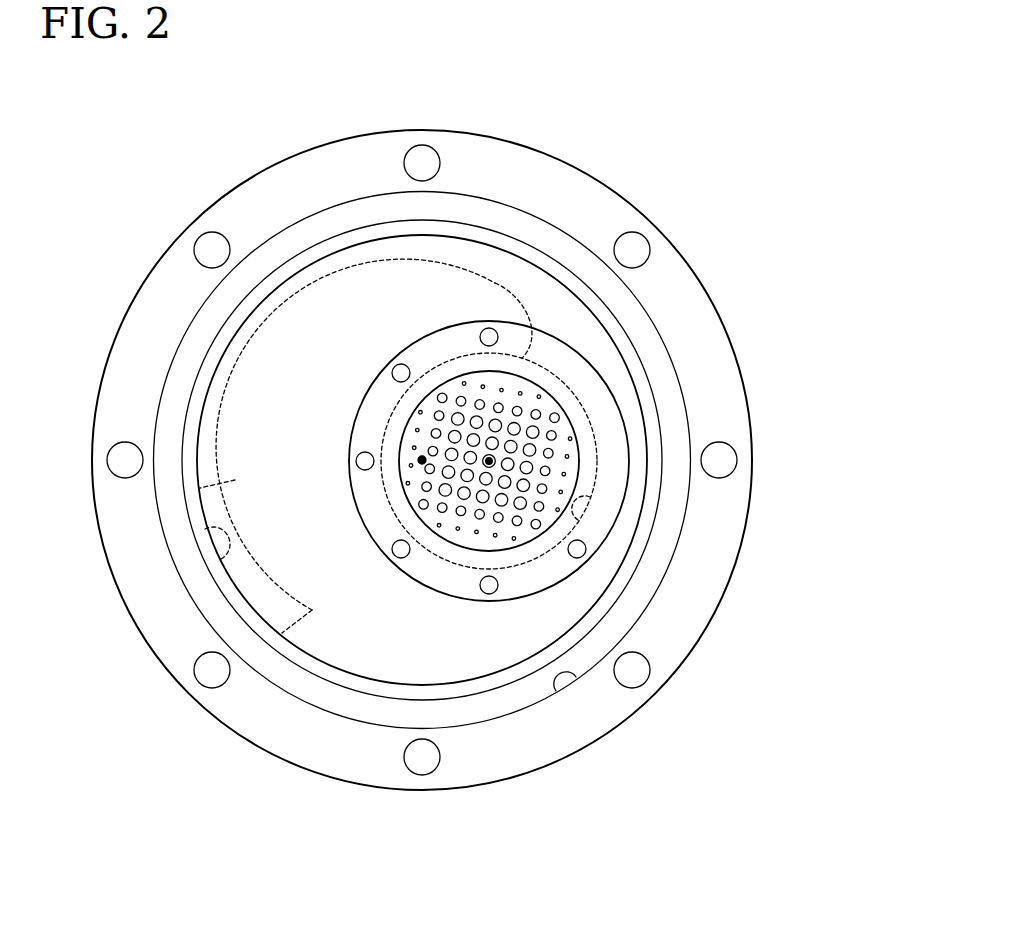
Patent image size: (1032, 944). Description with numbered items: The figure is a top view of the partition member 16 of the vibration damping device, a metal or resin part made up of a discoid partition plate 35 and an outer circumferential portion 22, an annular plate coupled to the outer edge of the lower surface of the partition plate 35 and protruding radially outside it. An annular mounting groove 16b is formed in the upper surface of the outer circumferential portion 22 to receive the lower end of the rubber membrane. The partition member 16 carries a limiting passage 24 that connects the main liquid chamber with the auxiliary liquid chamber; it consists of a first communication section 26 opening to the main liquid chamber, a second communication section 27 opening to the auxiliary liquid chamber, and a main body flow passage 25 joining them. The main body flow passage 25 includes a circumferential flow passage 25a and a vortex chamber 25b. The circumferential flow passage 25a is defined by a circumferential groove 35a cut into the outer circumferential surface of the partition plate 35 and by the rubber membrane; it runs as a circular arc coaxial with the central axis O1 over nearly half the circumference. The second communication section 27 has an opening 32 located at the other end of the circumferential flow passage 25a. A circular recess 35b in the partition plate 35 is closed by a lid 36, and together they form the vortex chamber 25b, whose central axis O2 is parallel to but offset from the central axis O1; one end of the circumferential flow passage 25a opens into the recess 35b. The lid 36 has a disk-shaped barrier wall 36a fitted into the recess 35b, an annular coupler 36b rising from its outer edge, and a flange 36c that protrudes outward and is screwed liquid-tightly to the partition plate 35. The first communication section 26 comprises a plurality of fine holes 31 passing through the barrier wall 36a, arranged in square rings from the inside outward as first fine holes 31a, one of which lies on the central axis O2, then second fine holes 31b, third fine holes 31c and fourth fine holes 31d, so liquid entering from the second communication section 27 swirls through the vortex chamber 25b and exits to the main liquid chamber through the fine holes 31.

The partition member 16 is at (688, 197).
The annular mounting groove 16b is at (576, 677).
The outer circumferential portion 22 is at (703, 592).
The limiting passage 24 is at (336, 240).
The main body flow passage 25 is at (62, 215).
The circumferential flow passage 25a is at (245, 331).
The vortex chamber 25b is at (385, 443).
The first communication section 26 is at (669, 374).
The second communication section 27 is at (236, 585).
The fine holes 31 is at (830, 197).
The first fine holes 31a is at (514, 463).
The second fine holes 31b is at (532, 467).
The third fine holes 31c is at (550, 470).
The fourth fine holes 31d is at (566, 473).
The opening 32 is at (222, 554).
The partition plate 35 is at (348, 607).
The circumferential groove 35a is at (323, 300).
The recess 35b is at (590, 497).
The lid 36 is at (585, 576).
The barrier wall 36a is at (467, 533).
The coupler 36b is at (433, 540).
The flange 36c is at (518, 583).
The central axis O1 is at (423, 456).
The central axis of the vortex chamber O2 is at (489, 455).